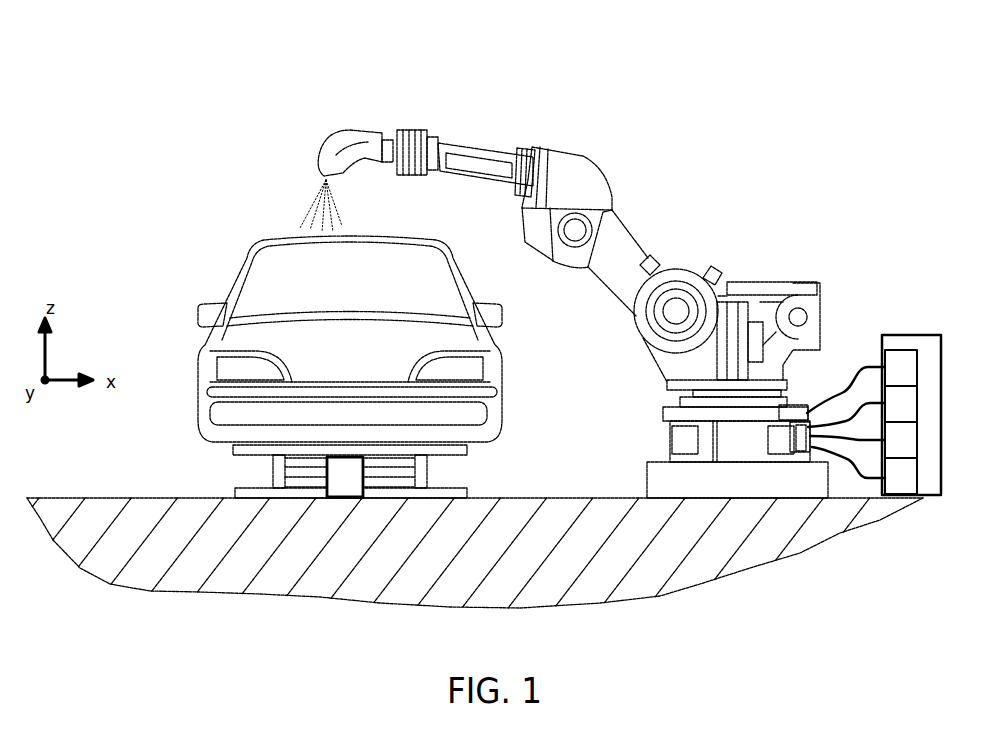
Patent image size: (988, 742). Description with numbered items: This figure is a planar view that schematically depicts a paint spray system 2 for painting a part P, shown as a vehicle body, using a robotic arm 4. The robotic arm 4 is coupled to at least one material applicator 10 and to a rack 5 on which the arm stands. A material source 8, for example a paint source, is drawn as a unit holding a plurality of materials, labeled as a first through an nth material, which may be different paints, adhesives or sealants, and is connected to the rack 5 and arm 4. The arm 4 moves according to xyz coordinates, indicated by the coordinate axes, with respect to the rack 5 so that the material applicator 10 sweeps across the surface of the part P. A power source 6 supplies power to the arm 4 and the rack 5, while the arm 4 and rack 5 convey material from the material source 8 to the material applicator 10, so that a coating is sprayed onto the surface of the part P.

The paint spray system 2 is at (316, 76).
The material applicator 10 is at (327, 148).
The robotic arm 4 is at (598, 176).
The power source 6 is at (748, 318).
The rack 5 is at (787, 383).
The material source 8 is at (921, 335).
The part P is at (350, 367).